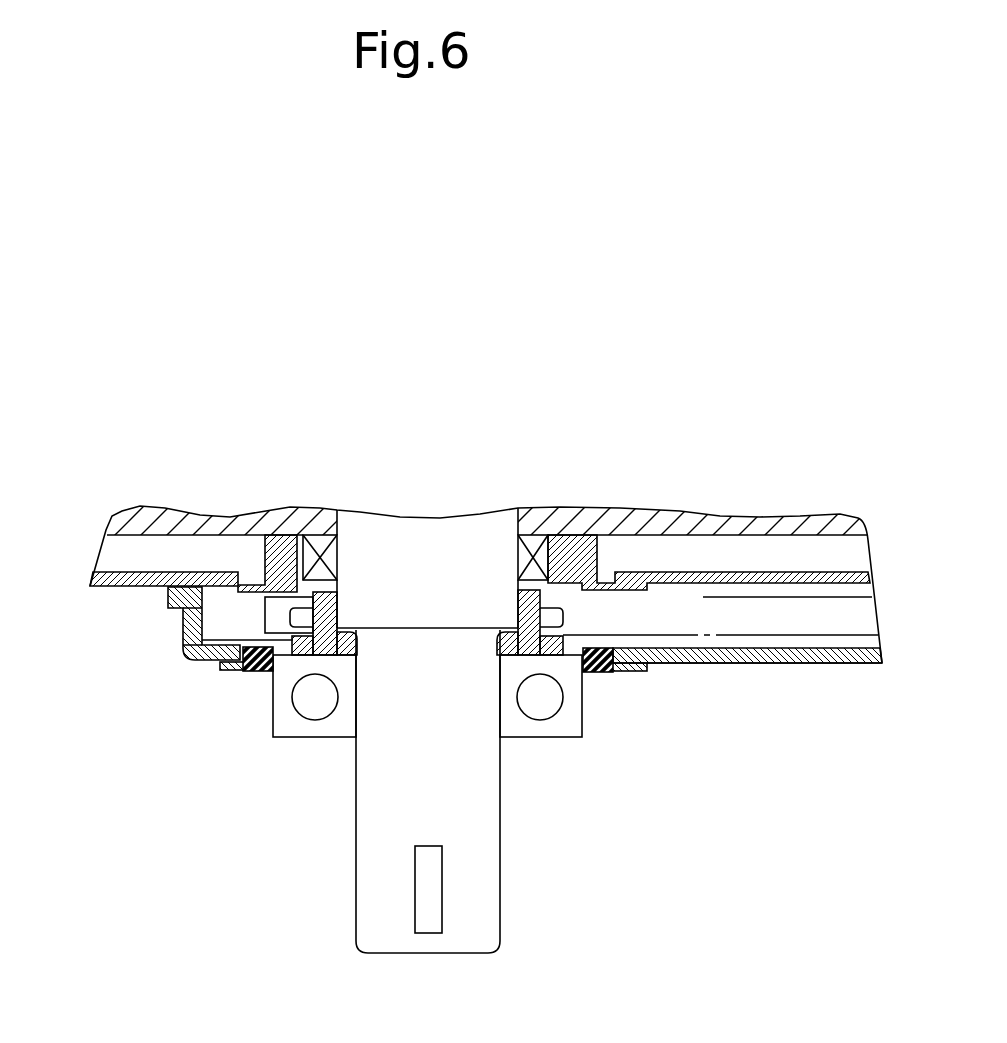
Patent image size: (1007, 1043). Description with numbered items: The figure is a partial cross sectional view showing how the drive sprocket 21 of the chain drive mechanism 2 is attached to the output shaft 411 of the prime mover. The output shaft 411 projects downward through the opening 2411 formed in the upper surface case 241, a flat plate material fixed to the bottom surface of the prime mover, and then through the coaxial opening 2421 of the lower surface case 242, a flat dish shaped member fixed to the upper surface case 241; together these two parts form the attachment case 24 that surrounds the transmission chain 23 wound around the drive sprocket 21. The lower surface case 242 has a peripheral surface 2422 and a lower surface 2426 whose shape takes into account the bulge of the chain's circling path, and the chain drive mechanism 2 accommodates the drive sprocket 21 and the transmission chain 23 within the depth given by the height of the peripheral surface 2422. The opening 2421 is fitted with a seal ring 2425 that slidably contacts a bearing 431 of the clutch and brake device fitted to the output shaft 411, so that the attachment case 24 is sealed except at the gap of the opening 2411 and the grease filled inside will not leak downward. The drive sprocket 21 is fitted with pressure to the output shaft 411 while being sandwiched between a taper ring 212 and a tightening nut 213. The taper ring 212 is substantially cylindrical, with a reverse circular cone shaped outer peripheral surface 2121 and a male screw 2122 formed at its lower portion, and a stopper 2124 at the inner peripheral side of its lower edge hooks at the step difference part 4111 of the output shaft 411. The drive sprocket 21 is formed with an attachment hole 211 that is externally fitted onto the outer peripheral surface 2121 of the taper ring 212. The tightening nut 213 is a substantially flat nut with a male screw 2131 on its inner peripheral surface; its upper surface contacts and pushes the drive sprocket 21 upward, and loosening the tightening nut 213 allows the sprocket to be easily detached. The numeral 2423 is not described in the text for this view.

The chain drive mechanism 2 is at (548, 497).
The drive sprocket 21 is at (318, 560).
The attachment hole 211 is at (300, 612).
The taper ring 212 is at (517, 606).
The outer peripheral surface 2121 is at (345, 634).
The male screw 2122 is at (180, 642).
The stopper 2124 is at (498, 640).
The tightening nut 213 is at (540, 655).
The male screw 2131 is at (552, 628).
The transmission chain 23 is at (703, 597).
The attachment case 24 is at (647, 580).
The upper surface case 241 is at (790, 580).
The opening 2411 is at (265, 542).
The lower surface case 242 is at (748, 645).
The opening 2421 is at (227, 668).
The peripheral surface 2422 is at (187, 630).
The mounting block 2423 is at (167, 595).
The seal ring 2425 is at (257, 678).
The lower surface 2426 is at (827, 664).
The output shaft 411 is at (378, 768).
The step difference part 4111 is at (380, 590).
The bearing 431 is at (535, 735).